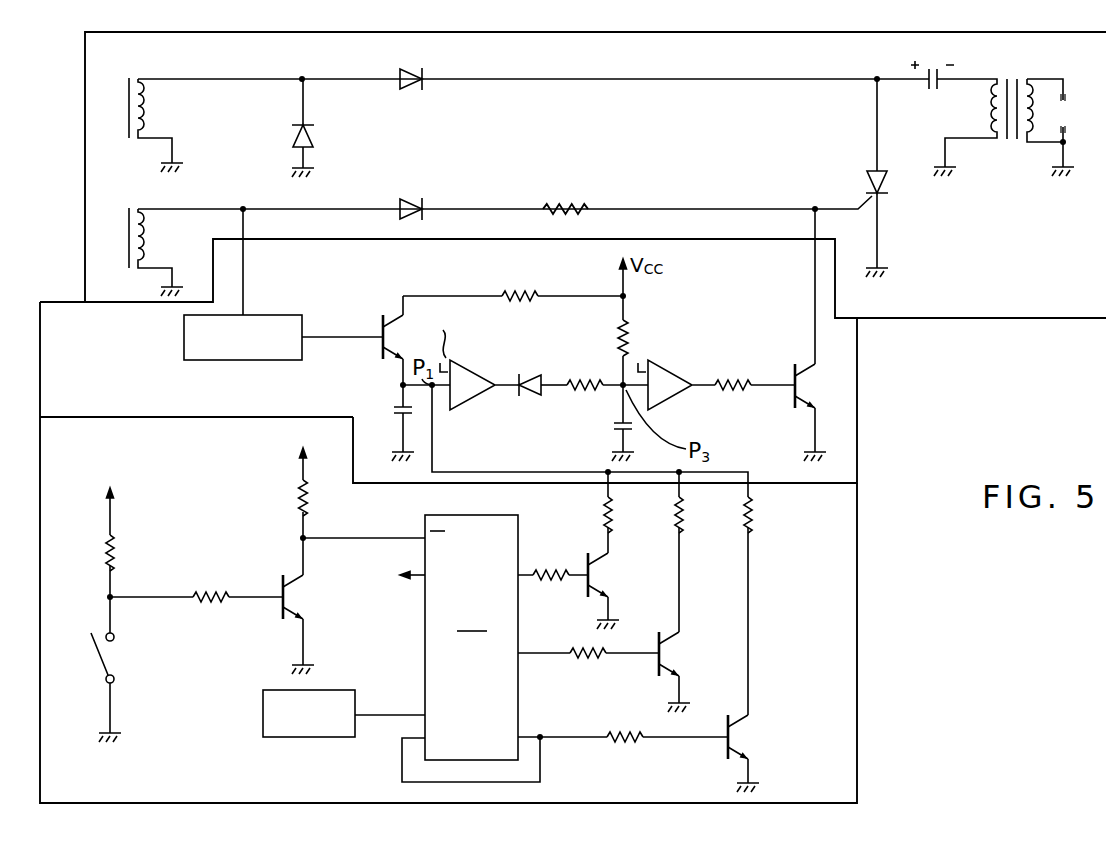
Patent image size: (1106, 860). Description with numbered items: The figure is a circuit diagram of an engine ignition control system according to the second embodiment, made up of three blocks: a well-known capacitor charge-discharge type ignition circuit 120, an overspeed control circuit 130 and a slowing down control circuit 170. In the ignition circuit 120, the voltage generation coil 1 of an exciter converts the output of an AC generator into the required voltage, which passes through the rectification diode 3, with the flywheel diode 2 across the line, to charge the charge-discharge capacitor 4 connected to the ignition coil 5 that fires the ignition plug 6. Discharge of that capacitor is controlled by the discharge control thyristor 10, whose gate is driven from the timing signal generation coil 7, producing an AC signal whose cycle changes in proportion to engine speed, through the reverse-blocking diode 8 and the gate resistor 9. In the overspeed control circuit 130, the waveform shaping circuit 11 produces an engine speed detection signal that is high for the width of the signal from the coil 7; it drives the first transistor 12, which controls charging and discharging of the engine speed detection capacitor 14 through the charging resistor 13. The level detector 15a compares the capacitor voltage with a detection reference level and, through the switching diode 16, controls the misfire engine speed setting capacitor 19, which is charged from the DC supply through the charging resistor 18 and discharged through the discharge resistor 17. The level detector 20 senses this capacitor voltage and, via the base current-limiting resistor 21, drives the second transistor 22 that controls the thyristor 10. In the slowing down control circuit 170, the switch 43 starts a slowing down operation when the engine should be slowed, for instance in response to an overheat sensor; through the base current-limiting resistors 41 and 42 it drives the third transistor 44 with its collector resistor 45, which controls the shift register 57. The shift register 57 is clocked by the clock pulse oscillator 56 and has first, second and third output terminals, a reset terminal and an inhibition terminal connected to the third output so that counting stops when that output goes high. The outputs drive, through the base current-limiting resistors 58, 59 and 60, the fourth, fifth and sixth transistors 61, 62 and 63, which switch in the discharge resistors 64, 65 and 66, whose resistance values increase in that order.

The voltage generation coil of an exciter 1 is at (133, 72).
The flywheel diode 2 is at (313, 136).
The rectification diode 3 is at (410, 88).
The charge-discharge capacitor 4 is at (931, 91).
The ignition coil 5 is at (1007, 141).
The ignition plug 6 is at (1071, 121).
The timing signal generation coil 7 is at (134, 204).
The reverse-blocking diode 8 is at (438, 203).
The gate resistor 9 is at (576, 200).
The discharge control thyristor 10 is at (889, 184).
The waveform shaping circuit 11 is at (183, 341).
The first transistor 12 is at (397, 318).
The charging resistor 13 is at (516, 303).
The engine speed detection capacitor 14 is at (397, 404).
The level detector 15a is at (465, 404).
The switching diode 16 is at (527, 398).
The discharge resistor 17 is at (586, 392).
The charging resistor 18 is at (614, 336).
The misfire engine speed setting capacitor 19 is at (636, 426).
The level detector 20 is at (666, 402).
The base current-limiting resistor 21 is at (732, 396).
The second transistor 22 is at (803, 364).
The base current-limiting resistor 41 is at (105, 550).
The base current-limiting resistor 42 is at (211, 604).
The switch 43 is at (118, 655).
The transistor Q3 44 is at (291, 572).
The collector resistor 45 is at (300, 497).
The clock pulse oscillator 56 is at (263, 714).
The shift register 57 is at (425, 648).
The base current-limiting resistor 58 is at (549, 584).
The base current-limiting resistor 59 is at (572, 660).
The base current-limiting resistor 60 is at (624, 746).
The fourth transistor 61 is at (612, 556).
The fifth transistor 62 is at (675, 640).
The sixth transistor 63 is at (753, 720).
The discharge resistor 64 is at (603, 505).
The discharge resistor 65 is at (684, 527).
The discharge resistor 66 is at (753, 527).
The basic circuit of ignition system of capacitor charge-discharge type 120 is at (1009, 319).
The overspeed control circuit 130 is at (925, 433).
The slowing down control circuit 170 is at (929, 602).